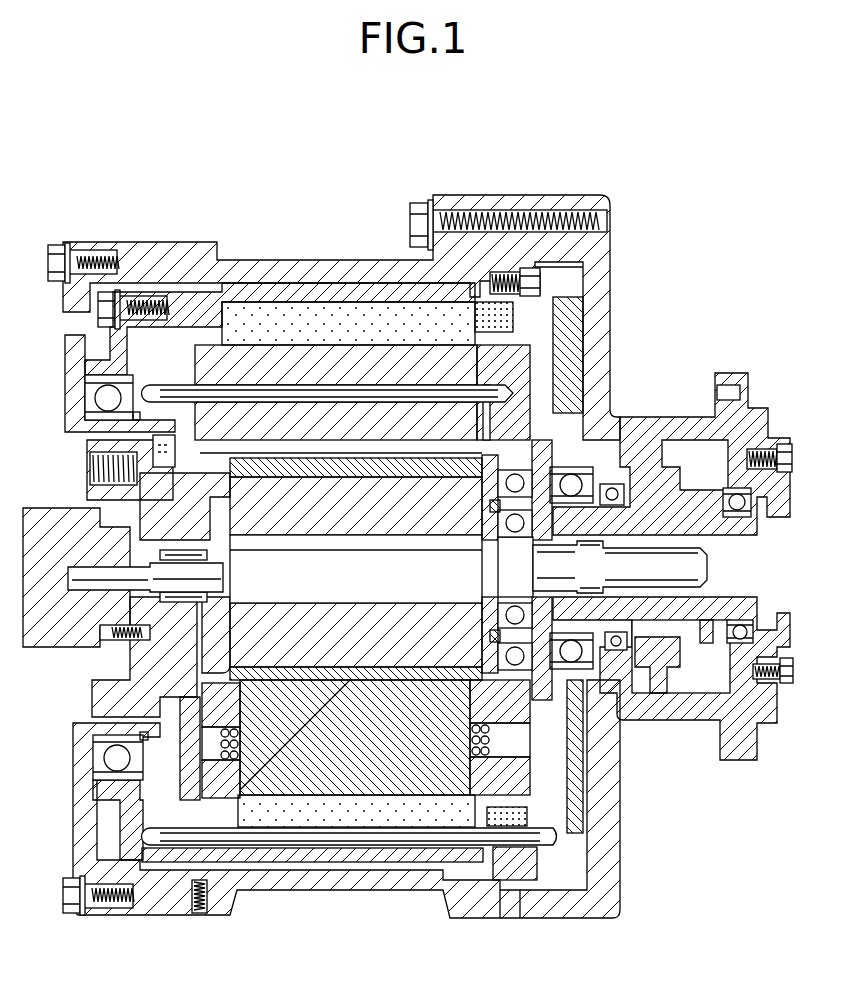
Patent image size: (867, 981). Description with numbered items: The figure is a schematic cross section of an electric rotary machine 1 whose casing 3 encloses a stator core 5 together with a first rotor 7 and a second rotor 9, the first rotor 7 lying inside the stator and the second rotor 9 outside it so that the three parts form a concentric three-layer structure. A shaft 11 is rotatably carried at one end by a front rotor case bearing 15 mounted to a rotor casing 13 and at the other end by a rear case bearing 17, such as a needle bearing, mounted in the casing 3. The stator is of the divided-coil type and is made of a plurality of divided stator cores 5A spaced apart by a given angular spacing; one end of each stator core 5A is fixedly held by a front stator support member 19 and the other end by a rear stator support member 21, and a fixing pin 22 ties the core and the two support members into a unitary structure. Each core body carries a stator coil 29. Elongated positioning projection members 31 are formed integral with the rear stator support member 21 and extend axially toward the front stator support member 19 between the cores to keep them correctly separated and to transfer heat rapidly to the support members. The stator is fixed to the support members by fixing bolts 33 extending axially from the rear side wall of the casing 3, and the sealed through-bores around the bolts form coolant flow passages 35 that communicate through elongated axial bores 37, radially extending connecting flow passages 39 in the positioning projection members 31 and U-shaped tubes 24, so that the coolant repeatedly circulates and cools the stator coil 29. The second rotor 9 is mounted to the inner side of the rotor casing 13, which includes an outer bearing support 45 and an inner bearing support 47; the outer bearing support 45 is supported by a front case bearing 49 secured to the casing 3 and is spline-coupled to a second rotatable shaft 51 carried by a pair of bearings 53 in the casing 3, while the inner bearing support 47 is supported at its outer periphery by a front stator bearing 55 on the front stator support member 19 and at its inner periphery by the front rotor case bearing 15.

The electric rotary machine 1 is at (662, 217).
The casing 3 is at (385, 267).
The stator core 5 is at (303, 747).
The divided stator core 5A is at (295, 735).
The first rotor 7 is at (300, 632).
The second rotor 9 is at (282, 320).
The shaft 11 is at (410, 608).
The rotor casing 13 is at (567, 307).
The front rotor case bearing 15 is at (520, 537).
The rear case bearing 17 is at (193, 562).
The front stator support member 19 is at (525, 350).
The rear stator support member 21 is at (207, 362).
The fixing pin 22 is at (207, 723).
The U-shaped tube 24 is at (85, 385).
The stator coil 29 is at (477, 790).
The positioning projection member 31 is at (357, 353).
The fixing bolt 33 is at (365, 447).
The coolant flow passage 35 is at (408, 437).
The elongated axial bore 37 is at (318, 392).
The connecting flow passage 39 is at (540, 395).
The outer bearing support 45 is at (615, 547).
The inner bearing support 47 is at (478, 530).
The front case bearing 49 is at (592, 452).
The second rotatable shaft 51 is at (720, 530).
The bearing 53 is at (625, 490).
The front stator bearing 55 is at (473, 497).